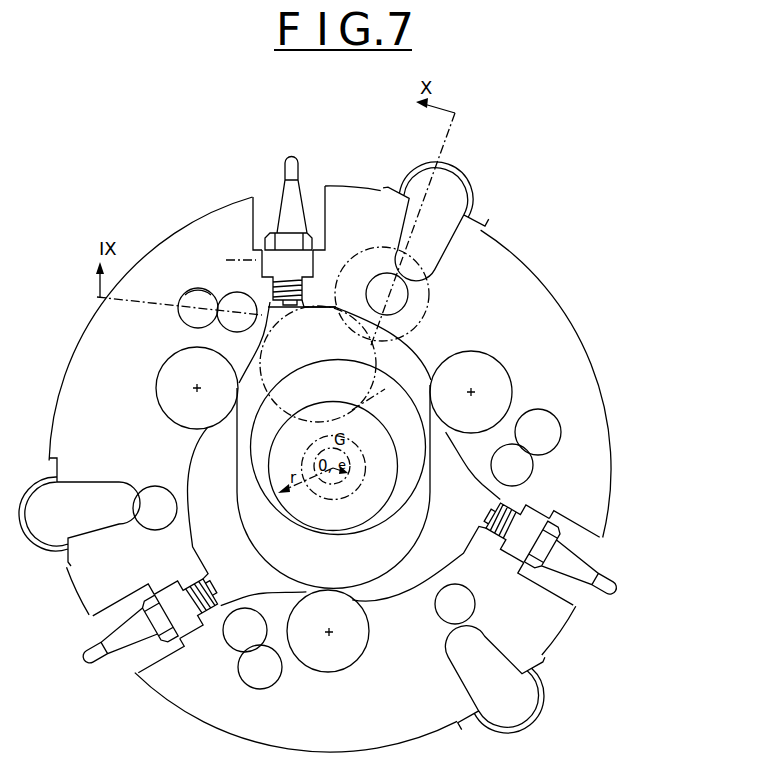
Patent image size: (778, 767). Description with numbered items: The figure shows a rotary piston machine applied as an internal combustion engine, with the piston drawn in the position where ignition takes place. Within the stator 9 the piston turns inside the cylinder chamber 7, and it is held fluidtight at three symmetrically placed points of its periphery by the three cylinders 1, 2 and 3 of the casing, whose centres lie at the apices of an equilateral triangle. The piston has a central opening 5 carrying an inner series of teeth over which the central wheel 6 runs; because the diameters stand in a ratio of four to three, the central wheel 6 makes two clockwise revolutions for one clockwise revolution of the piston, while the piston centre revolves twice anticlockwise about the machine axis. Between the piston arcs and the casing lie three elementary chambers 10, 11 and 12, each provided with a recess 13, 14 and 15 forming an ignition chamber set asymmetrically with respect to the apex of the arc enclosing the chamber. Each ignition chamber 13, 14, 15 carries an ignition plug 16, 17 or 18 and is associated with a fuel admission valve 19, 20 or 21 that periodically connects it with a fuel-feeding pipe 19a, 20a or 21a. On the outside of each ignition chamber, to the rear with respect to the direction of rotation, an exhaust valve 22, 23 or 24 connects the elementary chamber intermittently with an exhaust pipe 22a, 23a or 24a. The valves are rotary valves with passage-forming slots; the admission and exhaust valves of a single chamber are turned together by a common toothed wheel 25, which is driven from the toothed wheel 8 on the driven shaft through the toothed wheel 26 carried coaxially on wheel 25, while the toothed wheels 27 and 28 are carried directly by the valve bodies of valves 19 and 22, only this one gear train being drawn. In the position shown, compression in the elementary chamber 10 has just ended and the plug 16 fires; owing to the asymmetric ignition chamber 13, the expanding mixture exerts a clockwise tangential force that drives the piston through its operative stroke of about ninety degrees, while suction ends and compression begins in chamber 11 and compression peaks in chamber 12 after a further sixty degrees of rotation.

The cylinder 1 is at (480, 367).
The cylinder 2 is at (335, 660).
The cylinder 3 is at (167, 383).
The opening in the piston 5 is at (406, 408).
The central wheel 6 is at (398, 463).
The cylinder chamber 7 is at (347, 408).
The toothed wheel 8 is at (355, 492).
The stator 9 is at (330, 469).
The elementary chamber 10 is at (399, 336).
The elementary chamber 11 is at (402, 592).
The elementary chamber 12 is at (200, 498).
The recess forming an ignition chamber 13 is at (270, 278).
The recess forming an ignition chamber 14 is at (490, 500).
The recess forming an ignition chamber 15 is at (215, 608).
The ignition plug 16 is at (290, 205).
The ignition plug 17 is at (565, 562).
The ignition plug 18 is at (135, 628).
The fuel admission valve 19 is at (230, 302).
The fuel-feeding pipe 19a is at (192, 298).
The fuel admission valve 20 is at (500, 464).
The fuel-feeding pipe 20a is at (546, 432).
The fuel admission valve 21 is at (238, 640).
The fuel-feeding pipe 21a is at (252, 675).
The exhaust valve 22 is at (397, 295).
The exhaust pipe 22a is at (433, 230).
The exhaust valve 23 is at (460, 605).
The exhaust pipe 23a is at (482, 660).
The exhaust valve 24 is at (150, 517).
The exhaust pipe 24a is at (90, 497).
The common toothed wheel 25 is at (373, 402).
The toothed wheel 26 is at (376, 356).
The toothed wheel 27 is at (203, 277).
The toothed wheel 28 is at (388, 262).